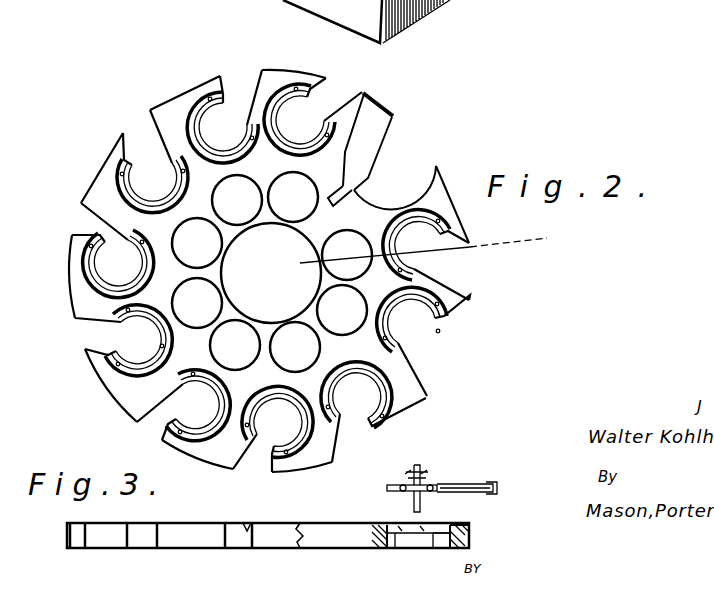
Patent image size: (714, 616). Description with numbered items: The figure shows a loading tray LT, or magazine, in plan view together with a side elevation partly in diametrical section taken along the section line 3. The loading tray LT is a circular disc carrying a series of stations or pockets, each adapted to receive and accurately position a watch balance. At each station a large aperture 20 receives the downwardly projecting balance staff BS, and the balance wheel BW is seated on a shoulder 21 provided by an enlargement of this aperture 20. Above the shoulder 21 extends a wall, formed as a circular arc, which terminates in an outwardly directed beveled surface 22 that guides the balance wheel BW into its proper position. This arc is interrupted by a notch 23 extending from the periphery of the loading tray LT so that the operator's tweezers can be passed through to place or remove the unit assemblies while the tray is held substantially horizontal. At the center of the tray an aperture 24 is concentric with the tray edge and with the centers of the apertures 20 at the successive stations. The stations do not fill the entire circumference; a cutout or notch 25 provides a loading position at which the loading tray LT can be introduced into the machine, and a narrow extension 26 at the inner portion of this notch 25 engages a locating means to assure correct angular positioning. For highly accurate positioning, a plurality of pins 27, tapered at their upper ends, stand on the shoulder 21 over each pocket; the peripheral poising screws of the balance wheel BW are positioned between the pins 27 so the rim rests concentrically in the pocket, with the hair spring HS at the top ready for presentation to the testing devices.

In FIG. 2, the aperture 20 is at (420, 247).
In FIG. 3, the aperture 20 is at (405, 545).
In FIG. 2, the shoulder 21 is at (302, 72).
In FIG. 3, the shoulder 21 is at (437, 541).
In FIG. 2, the beveled surface 22 is at (446, 232).
In FIG. 3, the beveled surface 22 is at (385, 522).
In FIG. 2, the notch 23 is at (141, 115).
In FIG. 3, the notch 23 is at (146, 551).
In FIG. 2, the aperture 24 is at (271, 273).
In FIG. 3, the aperture 24 is at (313, 524).
In FIG. 2, the cutout or notch 25 is at (410, 149).
In FIG. 2, the narrow extension 26 is at (357, 195).
In FIG. 2, the pins 27 is at (450, 230).
In FIG. 3, the pins 27 is at (422, 530).
In FIG. 2, the section line 3 is at (299, 269).
In FIG. 2, the loading tray LT is at (386, 112).
In FIG. 3, the loading tray LT is at (466, 531).
In FIG. 3, the hair spring HS is at (420, 468).
In FIG. 3, the balance staff BS is at (388, 487).
In FIG. 3, the balance wheel BW is at (465, 483).